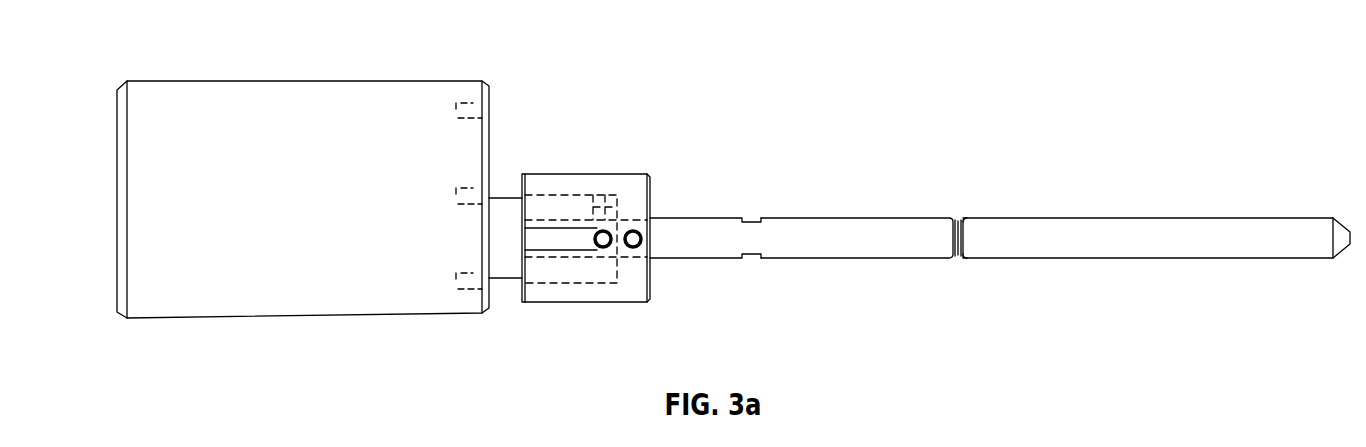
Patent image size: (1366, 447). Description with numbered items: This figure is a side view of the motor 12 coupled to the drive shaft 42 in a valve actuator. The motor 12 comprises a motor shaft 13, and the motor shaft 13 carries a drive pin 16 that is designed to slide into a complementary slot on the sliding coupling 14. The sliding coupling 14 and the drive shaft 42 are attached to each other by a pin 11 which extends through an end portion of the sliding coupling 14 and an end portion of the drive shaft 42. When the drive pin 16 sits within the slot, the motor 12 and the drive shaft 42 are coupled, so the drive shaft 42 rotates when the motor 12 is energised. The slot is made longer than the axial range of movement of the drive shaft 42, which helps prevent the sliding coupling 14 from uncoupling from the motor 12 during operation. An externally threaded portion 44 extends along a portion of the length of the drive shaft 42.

The motor 12 is at (262, 96).
The motor shaft 13 is at (498, 210).
The sliding coupling 14 is at (597, 183).
The drive pin 16 is at (603, 248).
The pin 11 is at (633, 248).
The externally threaded portion 44 is at (853, 235).
The drive shaft 42 is at (1090, 227).